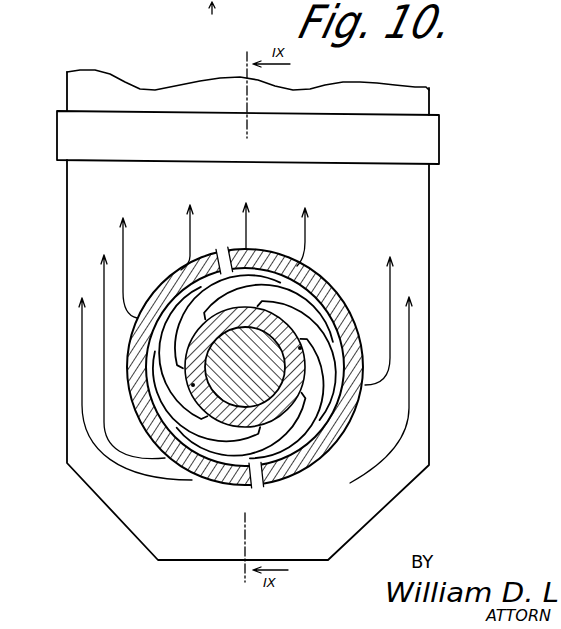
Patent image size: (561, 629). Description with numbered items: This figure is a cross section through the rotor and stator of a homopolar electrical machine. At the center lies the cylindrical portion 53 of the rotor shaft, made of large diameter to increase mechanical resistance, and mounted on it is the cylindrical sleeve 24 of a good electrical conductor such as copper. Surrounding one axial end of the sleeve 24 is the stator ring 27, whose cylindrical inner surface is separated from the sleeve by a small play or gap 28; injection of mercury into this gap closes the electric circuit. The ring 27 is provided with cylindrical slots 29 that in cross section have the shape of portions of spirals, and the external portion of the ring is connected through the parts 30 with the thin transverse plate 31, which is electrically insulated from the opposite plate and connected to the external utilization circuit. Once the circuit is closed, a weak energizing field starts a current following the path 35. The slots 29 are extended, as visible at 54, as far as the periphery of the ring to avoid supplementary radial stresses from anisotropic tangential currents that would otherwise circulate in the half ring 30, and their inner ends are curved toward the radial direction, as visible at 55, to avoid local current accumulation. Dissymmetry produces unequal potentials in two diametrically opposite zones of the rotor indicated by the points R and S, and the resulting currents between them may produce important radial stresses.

The cylindrical sleeve 24 is at (218, 413).
The stator ring 27 is at (270, 453).
The gap 28 is at (280, 420).
The cylindrical slots 29 is at (218, 280).
The connecting parts 30 is at (323, 282).
The thin transverse plates 31 is at (429, 200).
The current path 35 is at (82, 331).
The cylindrical shaft portion 53 is at (270, 348).
The slot extension 54 is at (262, 262).
The curved inner slot end 55 is at (202, 310).
The point R is at (193, 385).
The point S is at (300, 348).